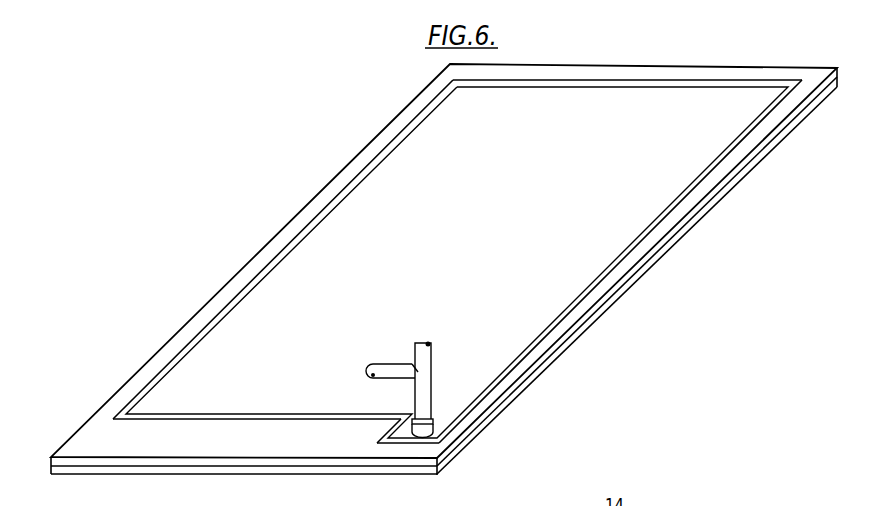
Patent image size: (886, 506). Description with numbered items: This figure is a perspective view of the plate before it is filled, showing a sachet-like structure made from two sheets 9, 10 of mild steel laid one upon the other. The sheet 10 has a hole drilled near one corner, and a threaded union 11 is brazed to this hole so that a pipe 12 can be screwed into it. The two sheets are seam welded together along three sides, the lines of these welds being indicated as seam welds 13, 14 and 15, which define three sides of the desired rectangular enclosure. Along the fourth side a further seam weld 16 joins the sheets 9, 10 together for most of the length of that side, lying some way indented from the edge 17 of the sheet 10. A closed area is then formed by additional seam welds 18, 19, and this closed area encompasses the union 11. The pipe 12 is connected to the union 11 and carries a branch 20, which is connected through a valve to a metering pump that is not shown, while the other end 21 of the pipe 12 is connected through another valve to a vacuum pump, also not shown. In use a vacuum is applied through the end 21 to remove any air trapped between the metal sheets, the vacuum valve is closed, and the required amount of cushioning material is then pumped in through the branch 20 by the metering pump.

The sheet 9 is at (437, 475).
The sheet 10 is at (318, 455).
The threaded union 11 is at (436, 428).
The pipe 12 is at (431, 396).
The seam weld 13 is at (700, 200).
The seam weld 14 is at (655, 82).
The seam weld 15 is at (340, 193).
The seam weld 16 is at (200, 419).
The edge 17 is at (128, 458).
The additional seam weld 18 is at (390, 440).
The additional seam weld 19 is at (418, 446).
The branch 20 is at (372, 372).
The other end of pipe 21 is at (430, 345).